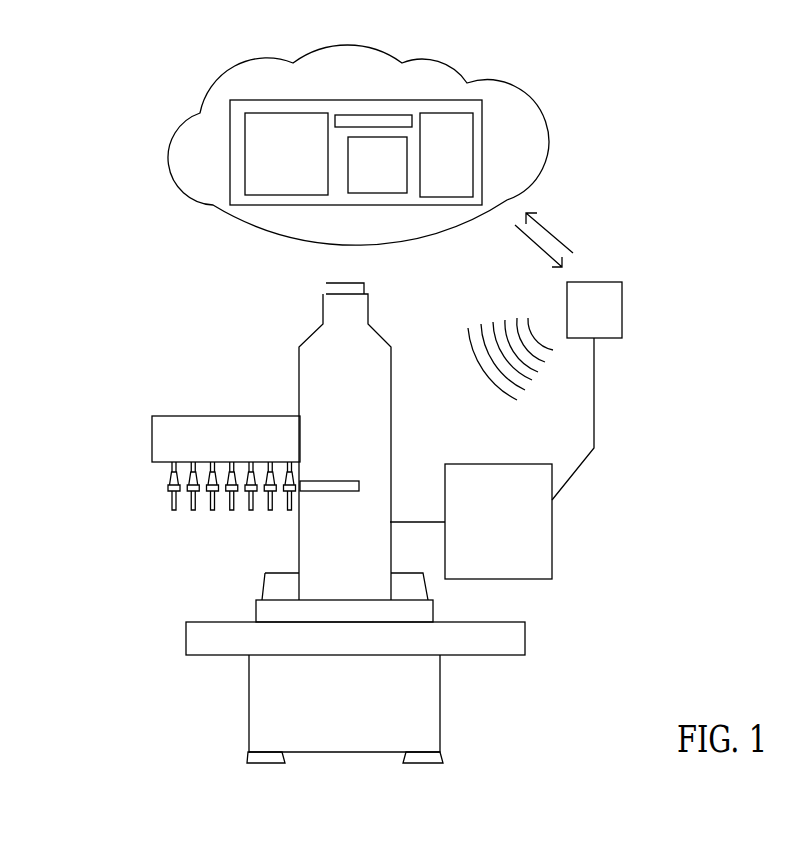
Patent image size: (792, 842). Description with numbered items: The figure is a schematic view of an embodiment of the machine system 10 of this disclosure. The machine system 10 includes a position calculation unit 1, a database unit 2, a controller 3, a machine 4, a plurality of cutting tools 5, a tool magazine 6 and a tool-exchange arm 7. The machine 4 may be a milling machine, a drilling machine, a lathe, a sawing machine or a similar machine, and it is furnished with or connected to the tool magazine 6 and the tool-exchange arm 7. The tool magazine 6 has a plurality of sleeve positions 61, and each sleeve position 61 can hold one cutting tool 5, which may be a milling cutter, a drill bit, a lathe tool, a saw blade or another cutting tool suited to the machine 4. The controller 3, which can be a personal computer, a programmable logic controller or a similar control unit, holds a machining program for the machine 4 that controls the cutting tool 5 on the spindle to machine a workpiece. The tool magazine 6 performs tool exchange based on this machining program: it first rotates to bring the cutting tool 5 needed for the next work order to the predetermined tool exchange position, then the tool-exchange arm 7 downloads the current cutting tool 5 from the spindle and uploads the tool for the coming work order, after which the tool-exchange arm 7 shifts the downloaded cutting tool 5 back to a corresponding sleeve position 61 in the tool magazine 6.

The machine system 10 is at (74, 73).
The position calculation unit 1 is at (608, 312).
The database unit 2 is at (425, 100).
The controller 3 is at (532, 547).
The machine 4 is at (208, 630).
The cutting tool 5 is at (204, 505).
The tool magazine 6 is at (170, 420).
The sleeve position 61 is at (170, 479).
The tool-exchange arm 7 is at (323, 491).